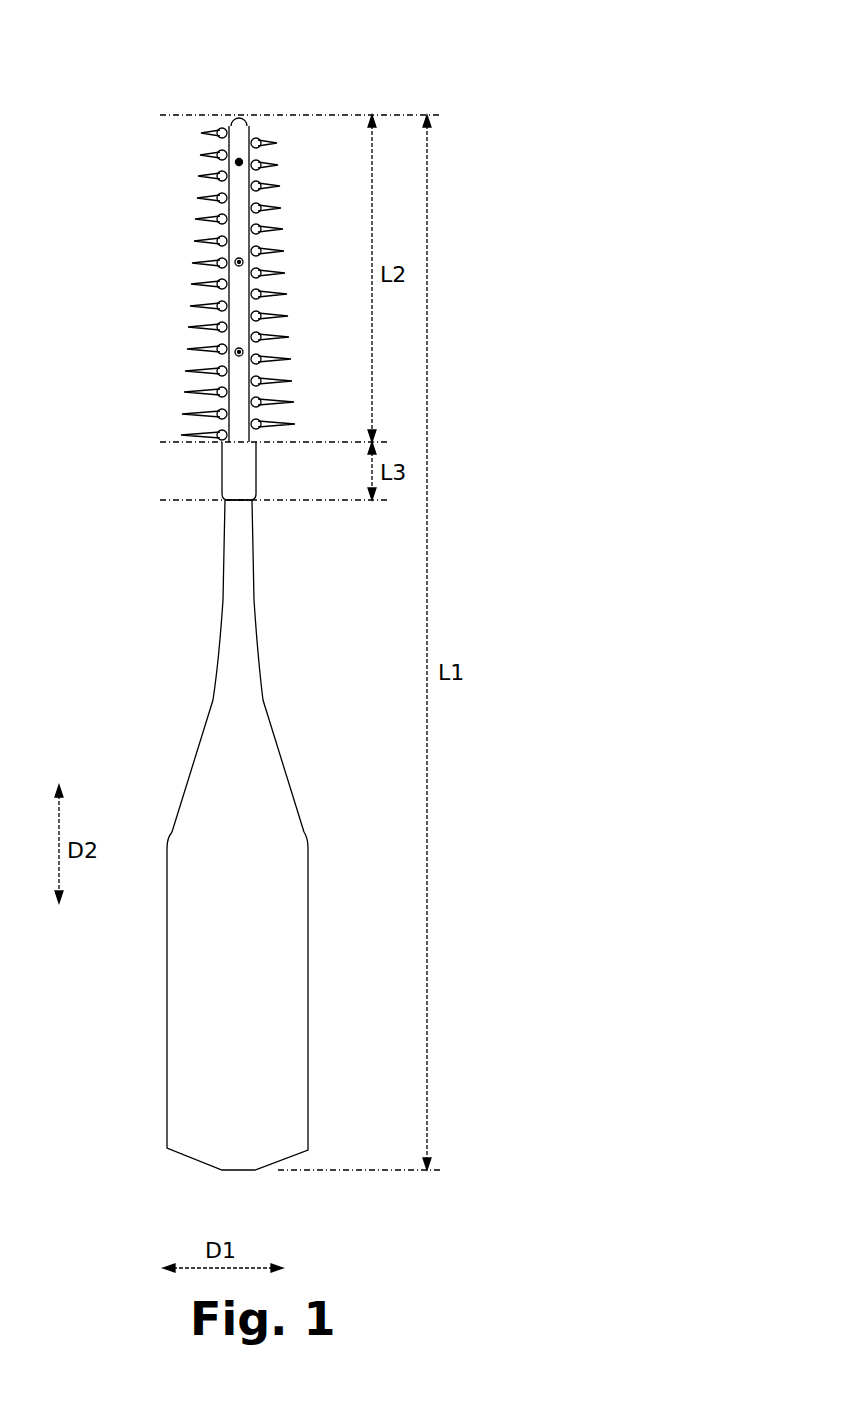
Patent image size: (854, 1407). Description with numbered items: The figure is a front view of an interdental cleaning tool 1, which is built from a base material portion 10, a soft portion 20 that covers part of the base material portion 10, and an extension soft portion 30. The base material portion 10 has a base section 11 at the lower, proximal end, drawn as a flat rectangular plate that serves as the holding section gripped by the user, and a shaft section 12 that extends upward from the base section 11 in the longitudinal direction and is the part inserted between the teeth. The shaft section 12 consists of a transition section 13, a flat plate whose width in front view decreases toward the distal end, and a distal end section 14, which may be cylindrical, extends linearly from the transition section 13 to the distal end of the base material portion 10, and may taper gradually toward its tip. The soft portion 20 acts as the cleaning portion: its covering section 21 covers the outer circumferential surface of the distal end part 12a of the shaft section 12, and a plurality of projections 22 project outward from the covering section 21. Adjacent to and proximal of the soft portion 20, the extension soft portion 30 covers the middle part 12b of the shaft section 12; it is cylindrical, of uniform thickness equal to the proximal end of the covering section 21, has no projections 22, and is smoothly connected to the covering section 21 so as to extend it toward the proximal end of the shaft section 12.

The interdental cleaning tool 1 is at (445, 66).
The base material portion 10 is at (168, 1071).
The base section 11 is at (167, 972).
The shaft section 12 is at (213, 678).
The distal end part 12a is at (213, 128).
The middle part 12b is at (233, 502).
The transition section 13 is at (276, 740).
The distal end section 14 is at (256, 526).
The soft portion 20 is at (158, 115).
The covering section 21 is at (252, 262).
The projections 22 is at (268, 250).
The extension soft portion 30 is at (158, 442).